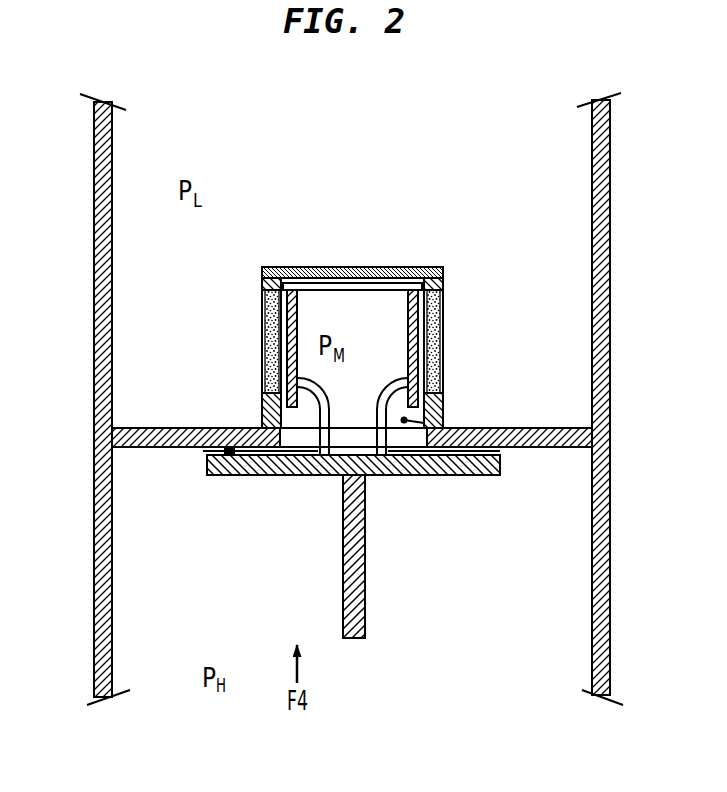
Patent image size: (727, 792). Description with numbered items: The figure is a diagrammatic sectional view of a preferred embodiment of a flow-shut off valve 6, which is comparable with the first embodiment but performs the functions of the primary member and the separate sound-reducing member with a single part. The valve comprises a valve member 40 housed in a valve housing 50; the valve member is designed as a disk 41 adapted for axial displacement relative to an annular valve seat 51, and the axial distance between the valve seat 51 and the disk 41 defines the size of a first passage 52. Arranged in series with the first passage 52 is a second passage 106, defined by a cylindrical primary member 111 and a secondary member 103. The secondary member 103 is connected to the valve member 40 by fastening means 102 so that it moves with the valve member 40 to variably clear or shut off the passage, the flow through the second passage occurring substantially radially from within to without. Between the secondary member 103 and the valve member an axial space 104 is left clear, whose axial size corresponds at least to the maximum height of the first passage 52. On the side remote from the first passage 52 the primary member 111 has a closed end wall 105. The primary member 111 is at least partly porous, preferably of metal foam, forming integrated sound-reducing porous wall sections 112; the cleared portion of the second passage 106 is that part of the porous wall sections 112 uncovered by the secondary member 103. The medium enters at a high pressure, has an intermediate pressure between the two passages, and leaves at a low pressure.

The flow-shut off valve 6 is at (313, 399).
The valve housing 50 is at (119, 377).
The annular valve seat 51 is at (203, 428).
The first passage 52 is at (226, 451).
The disk 41 is at (425, 476).
The valve member 40 is at (402, 603).
The closed end wall 105 is at (380, 267).
The second passage 106 is at (263, 303).
The porous wall sections 112 is at (443, 350).
The cylindrical primary member 111 is at (443, 397).
The axial space 104 is at (443, 413).
The secondary member 103 is at (408, 317).
The fastening means 102 is at (332, 403).